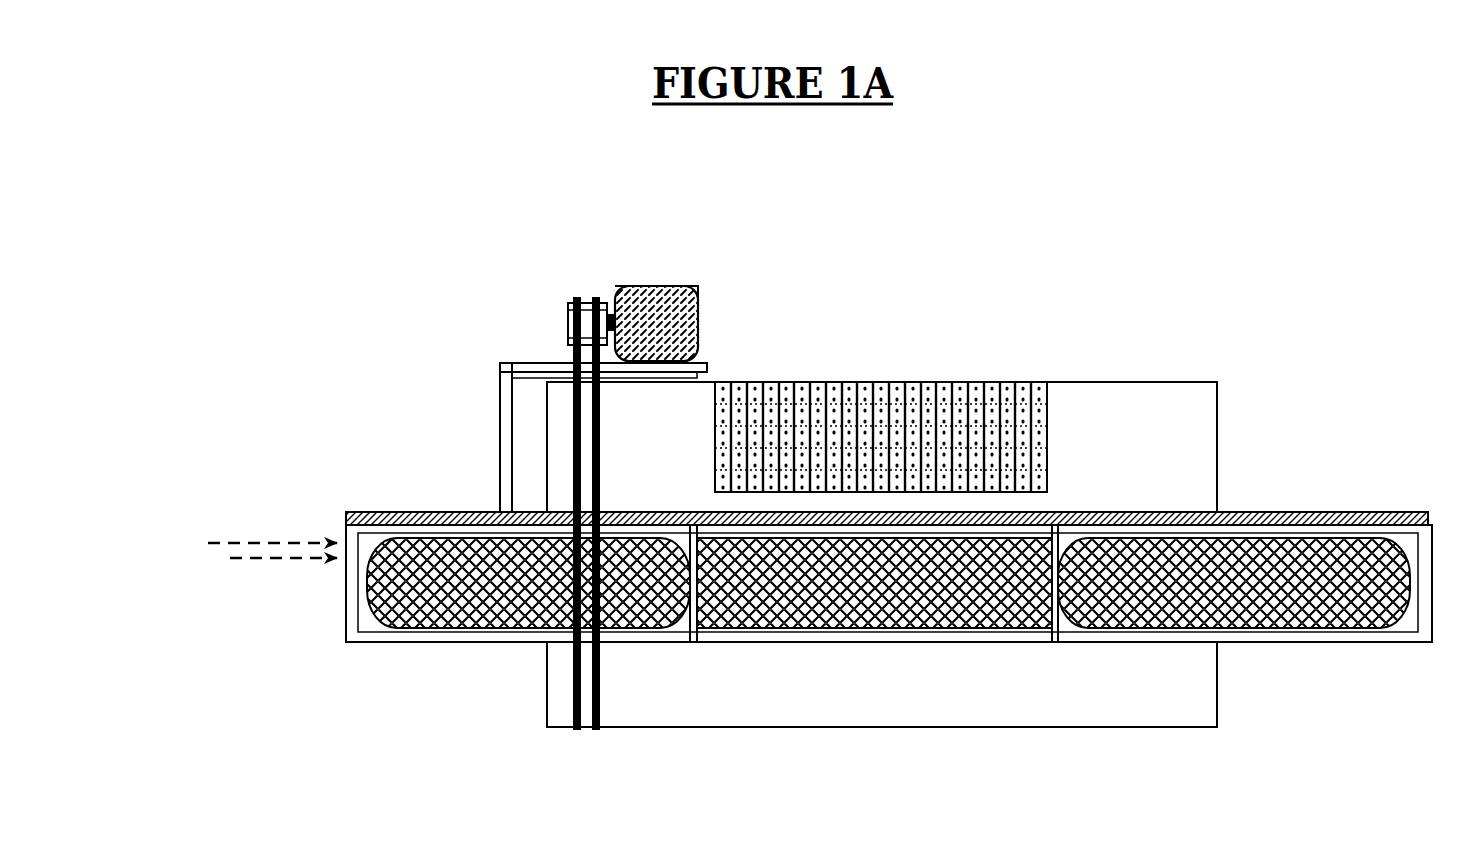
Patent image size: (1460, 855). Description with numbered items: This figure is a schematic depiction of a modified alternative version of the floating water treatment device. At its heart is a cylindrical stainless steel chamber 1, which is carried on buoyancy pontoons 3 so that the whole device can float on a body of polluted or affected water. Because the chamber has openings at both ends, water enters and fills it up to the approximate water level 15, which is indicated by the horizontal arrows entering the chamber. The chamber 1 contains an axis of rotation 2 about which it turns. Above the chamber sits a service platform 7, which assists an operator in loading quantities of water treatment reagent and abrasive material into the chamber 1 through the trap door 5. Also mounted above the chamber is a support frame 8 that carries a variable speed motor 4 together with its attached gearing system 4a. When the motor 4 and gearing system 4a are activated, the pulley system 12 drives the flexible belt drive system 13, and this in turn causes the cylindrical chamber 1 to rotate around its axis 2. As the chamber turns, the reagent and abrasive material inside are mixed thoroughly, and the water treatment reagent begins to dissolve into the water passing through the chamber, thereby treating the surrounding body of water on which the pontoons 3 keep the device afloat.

The stainless steel chamber 1 is at (1197, 440).
The axis of rotation of chamber 2 is at (270, 565).
The buoyancy pontoon 3 is at (425, 618).
The variable speed motor 4 is at (673, 285).
The gearing system 4a is at (617, 283).
The trap door for loading reagents 5 is at (853, 385).
The service platform 7 is at (455, 510).
The support frame for motor and gearing system 8 is at (500, 362).
The pulley system 12 is at (565, 310).
The flexible belt drive system 13 is at (572, 733).
The approximate water level 15 is at (249, 545).